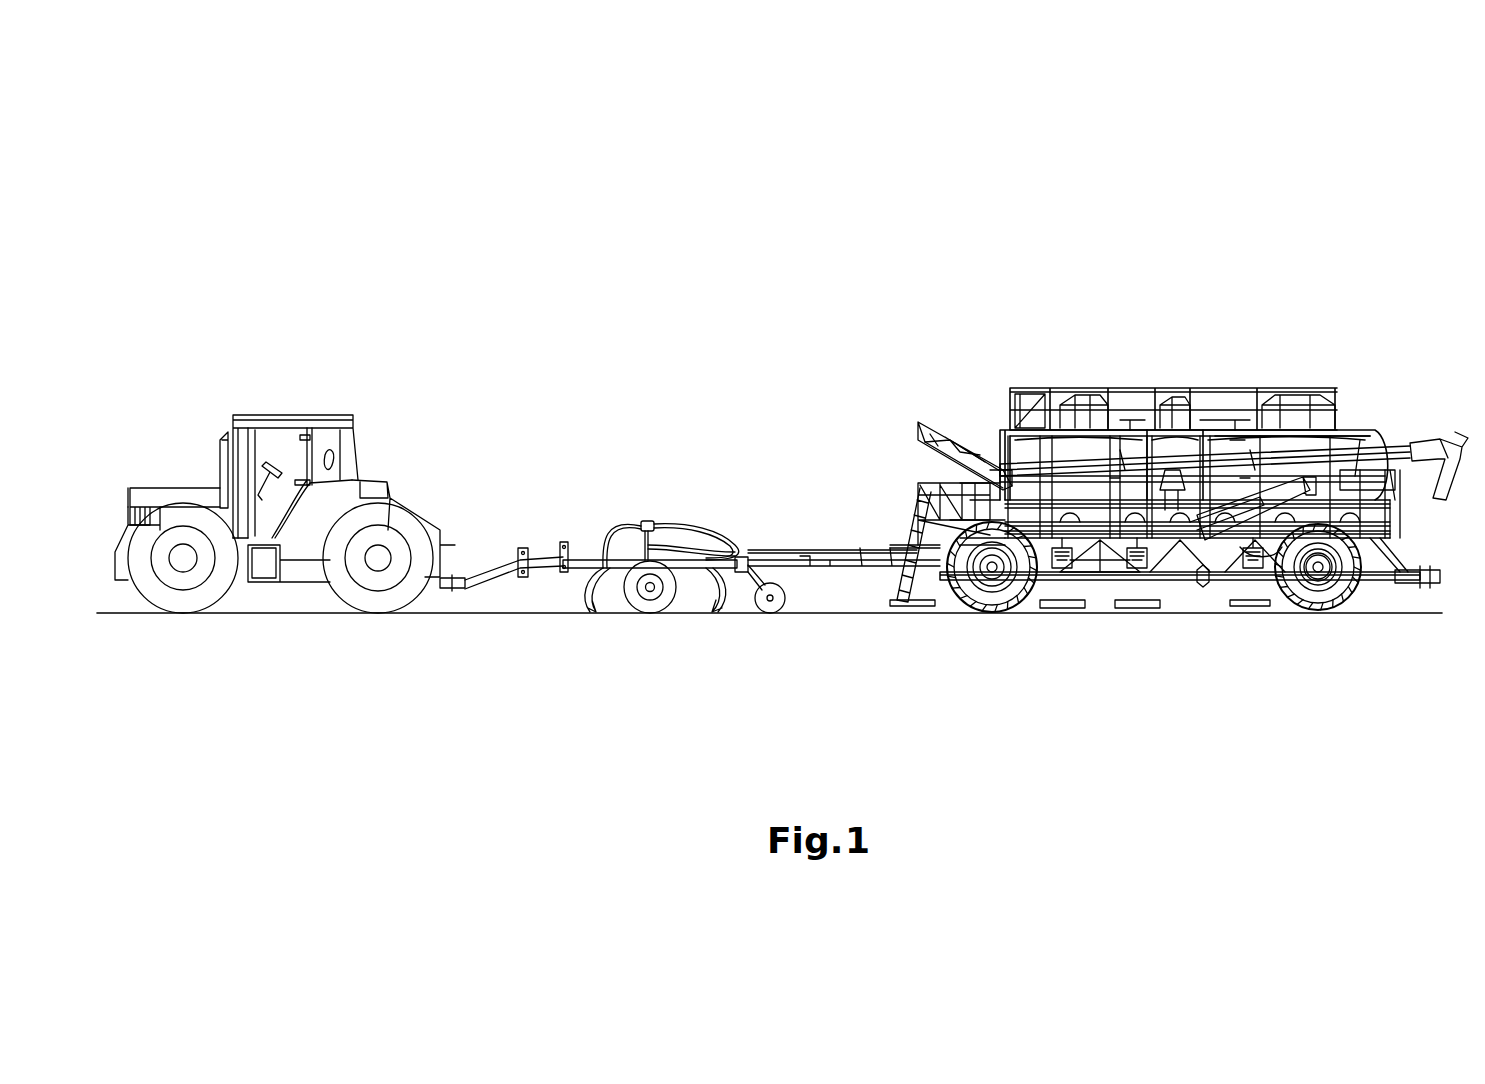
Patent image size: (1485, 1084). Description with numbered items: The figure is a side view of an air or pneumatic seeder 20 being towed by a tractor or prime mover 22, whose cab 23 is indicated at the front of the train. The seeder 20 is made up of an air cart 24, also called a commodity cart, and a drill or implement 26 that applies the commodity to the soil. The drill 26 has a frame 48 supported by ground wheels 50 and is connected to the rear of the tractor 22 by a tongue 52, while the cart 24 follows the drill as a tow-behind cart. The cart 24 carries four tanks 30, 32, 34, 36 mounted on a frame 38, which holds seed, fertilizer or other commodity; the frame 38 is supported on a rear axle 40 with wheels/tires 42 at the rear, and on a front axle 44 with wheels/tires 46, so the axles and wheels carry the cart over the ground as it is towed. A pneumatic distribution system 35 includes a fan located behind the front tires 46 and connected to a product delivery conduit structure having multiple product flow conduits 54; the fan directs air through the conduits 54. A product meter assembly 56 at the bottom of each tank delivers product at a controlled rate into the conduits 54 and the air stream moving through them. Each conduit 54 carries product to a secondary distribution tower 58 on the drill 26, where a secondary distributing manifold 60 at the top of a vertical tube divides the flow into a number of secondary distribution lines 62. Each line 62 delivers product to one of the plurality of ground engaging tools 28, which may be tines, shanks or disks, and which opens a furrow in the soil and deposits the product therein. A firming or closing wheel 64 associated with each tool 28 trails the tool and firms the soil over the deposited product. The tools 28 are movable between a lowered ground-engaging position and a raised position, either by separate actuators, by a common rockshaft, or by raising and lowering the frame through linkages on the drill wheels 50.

The air seeder 20 is at (1170, 434).
The tractor 22 is at (290, 426).
The tractor cab 23 is at (268, 440).
The air cart 24 is at (1194, 382).
The drill 26 is at (746, 556).
The ground engaging tools 28 is at (590, 614).
The tank 30 is at (977, 438).
The tank 32 is at (1090, 394).
The tank 34 is at (1200, 438).
The pneumatic distribution system 35 is at (1203, 600).
The tank 36 is at (1283, 438).
The frame 38 is at (1085, 582).
The rear axle 40 is at (1332, 582).
The wheels/tires 42 is at (1322, 596).
The front axle 44 is at (992, 586).
The wheels/tires 46 is at (962, 596).
The frame 48 is at (690, 588).
The ground wheels 50 is at (650, 614).
The tongue 52 is at (483, 596).
The product flow conduits 54 is at (838, 545).
The product meter assembly 56 is at (1062, 592).
The secondary distribution tower 58 is at (666, 528).
The secondary distributing manifold 60 is at (640, 524).
The secondary distribution lines 62 is at (688, 538).
The firming wheel 64 is at (775, 610).